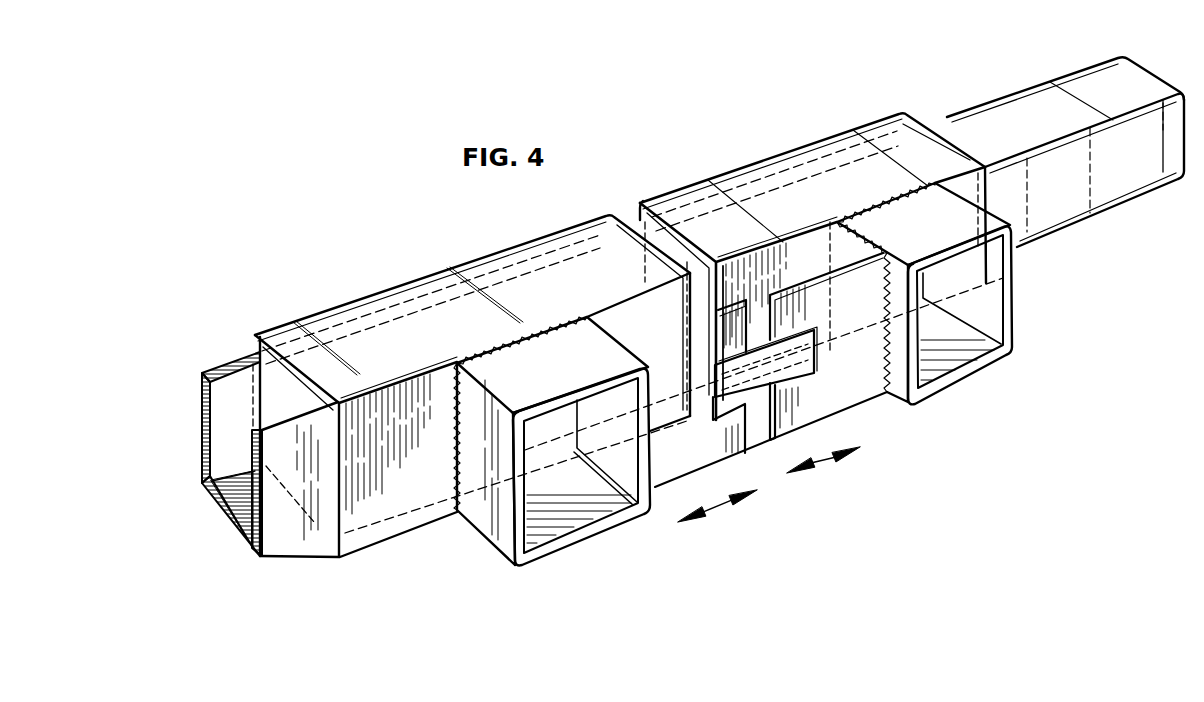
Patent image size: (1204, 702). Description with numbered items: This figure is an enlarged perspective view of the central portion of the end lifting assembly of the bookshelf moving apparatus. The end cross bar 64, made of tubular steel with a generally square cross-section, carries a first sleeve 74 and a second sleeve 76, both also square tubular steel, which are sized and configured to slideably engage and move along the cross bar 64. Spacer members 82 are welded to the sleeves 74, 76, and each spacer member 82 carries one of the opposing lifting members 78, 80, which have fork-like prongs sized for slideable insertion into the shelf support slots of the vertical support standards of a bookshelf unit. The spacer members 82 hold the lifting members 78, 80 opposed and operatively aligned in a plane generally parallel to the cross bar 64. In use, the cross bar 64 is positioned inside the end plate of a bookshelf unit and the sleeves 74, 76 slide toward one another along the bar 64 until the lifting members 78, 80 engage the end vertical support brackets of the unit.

The end cross bar 64 is at (280, 540).
The first sleeve 74 is at (413, 312).
The second sleeve 76 is at (838, 165).
The lifting member 78 is at (722, 450).
The lifting member 80 is at (861, 398).
The spacer member 82 is at (593, 530).